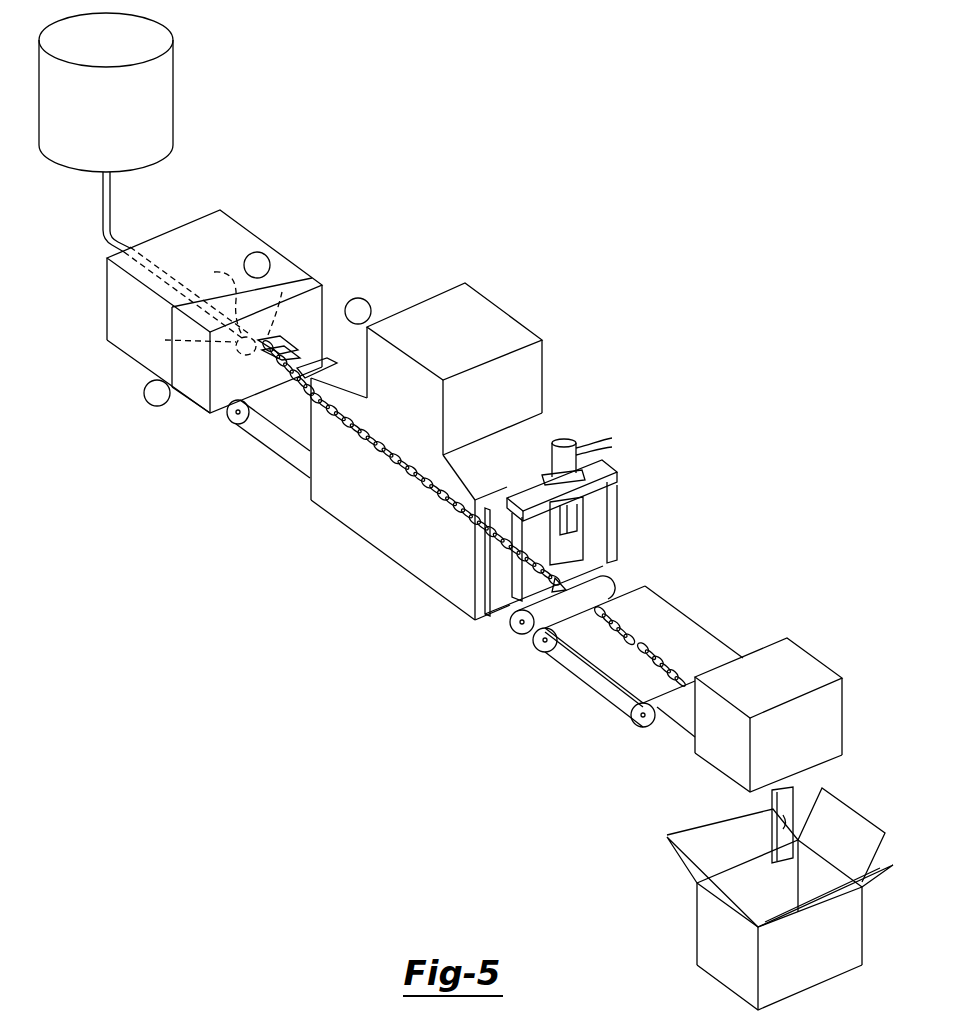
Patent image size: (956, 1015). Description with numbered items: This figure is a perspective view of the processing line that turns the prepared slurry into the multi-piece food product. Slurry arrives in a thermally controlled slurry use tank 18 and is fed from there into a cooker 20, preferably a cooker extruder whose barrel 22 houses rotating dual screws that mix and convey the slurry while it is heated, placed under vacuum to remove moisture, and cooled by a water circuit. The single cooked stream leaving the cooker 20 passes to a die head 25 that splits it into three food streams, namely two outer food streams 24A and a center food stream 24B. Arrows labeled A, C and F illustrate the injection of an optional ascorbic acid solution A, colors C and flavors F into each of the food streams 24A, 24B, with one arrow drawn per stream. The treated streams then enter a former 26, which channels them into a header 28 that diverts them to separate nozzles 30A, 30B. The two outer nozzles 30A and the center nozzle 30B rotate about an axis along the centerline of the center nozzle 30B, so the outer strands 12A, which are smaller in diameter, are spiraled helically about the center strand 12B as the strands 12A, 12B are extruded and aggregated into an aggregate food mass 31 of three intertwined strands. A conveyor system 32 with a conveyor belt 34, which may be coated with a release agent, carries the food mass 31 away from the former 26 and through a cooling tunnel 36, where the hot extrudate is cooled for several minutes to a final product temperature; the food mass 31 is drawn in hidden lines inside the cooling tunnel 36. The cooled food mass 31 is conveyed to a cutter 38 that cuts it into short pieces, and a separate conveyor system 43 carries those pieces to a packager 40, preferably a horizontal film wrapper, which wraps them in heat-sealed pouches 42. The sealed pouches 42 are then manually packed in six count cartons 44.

The slurry use tank 18 is at (168, 89).
The cooker 20 is at (233, 240).
The barrel 22 is at (121, 266).
The outer food streams 24A is at (216, 310).
The center food stream 24B is at (214, 295).
The die head 25 is at (300, 272).
The former 26 is at (322, 284).
The header 28 is at (243, 423).
The outer nozzles 30A is at (276, 346).
The center nozzle 30B is at (276, 340).
The outer strands 12A is at (308, 384).
The center strand 12B is at (334, 363).
The aggregate food mass 31 is at (392, 474).
The conveyor system 32 is at (284, 486).
The conveyor belt 34 is at (307, 428).
The cooling tunnel 36 is at (484, 318).
The cutter 38 is at (606, 500).
The packager 40 is at (796, 655).
The heat-sealed pouches 42 is at (783, 833).
The separate conveyor system 43 is at (692, 605).
The six count cartons 44 is at (702, 937).
The ascorbic acid solution A is at (257, 340).
The colors C is at (327, 326).
The flavors F is at (185, 391).